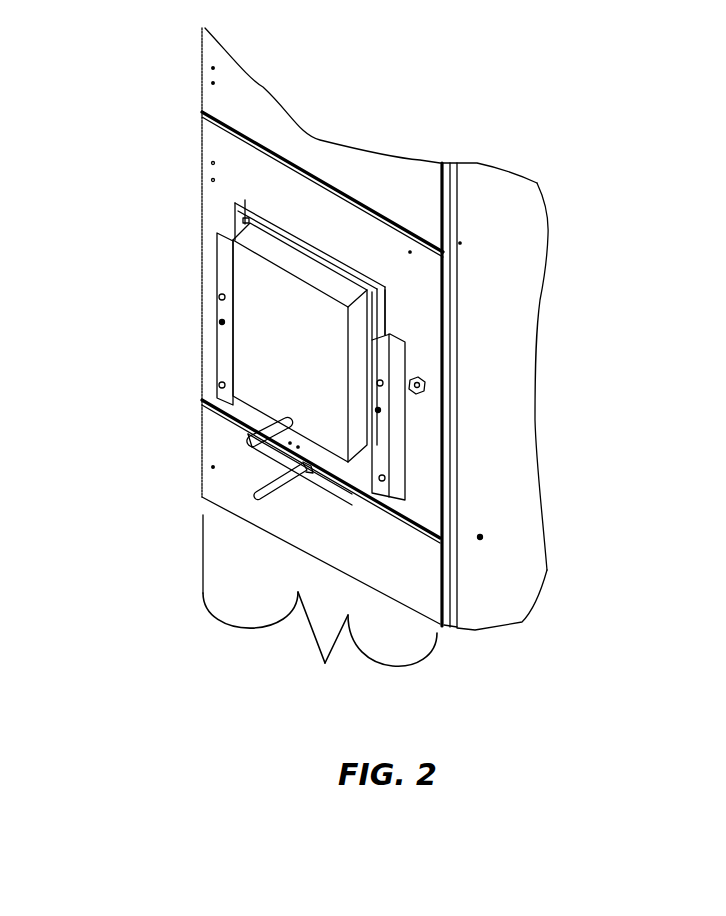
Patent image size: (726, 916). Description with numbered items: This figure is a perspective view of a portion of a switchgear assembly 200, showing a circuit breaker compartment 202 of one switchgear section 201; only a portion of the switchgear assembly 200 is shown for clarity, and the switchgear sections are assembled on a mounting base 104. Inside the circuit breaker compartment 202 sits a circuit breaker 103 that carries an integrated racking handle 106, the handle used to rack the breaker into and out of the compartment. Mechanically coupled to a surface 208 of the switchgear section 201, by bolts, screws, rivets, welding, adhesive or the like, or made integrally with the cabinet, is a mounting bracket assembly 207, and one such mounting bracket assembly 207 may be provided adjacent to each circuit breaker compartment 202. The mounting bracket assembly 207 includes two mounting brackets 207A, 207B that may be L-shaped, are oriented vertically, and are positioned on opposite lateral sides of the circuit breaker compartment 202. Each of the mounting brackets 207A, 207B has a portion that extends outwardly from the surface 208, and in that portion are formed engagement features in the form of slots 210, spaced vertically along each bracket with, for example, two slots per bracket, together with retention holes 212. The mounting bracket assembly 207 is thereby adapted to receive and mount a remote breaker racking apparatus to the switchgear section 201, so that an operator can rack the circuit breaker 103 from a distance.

The switchgear assembly 200 is at (196, 110).
The switchgear section 201 is at (325, 663).
The circuit breaker compartment 202 is at (240, 200).
The circuit breaker 103 is at (305, 280).
The mounting base 104 is at (395, 283).
The integrated racking handle 106 is at (258, 450).
The mounting bracket assembly 207 is at (347, 343).
The mounting bracket 207A is at (223, 342).
The mounting bracket 207B is at (390, 457).
The surface 208 is at (382, 250).
The slots 210 is at (222, 295).
The retention holes 212 is at (222, 320).